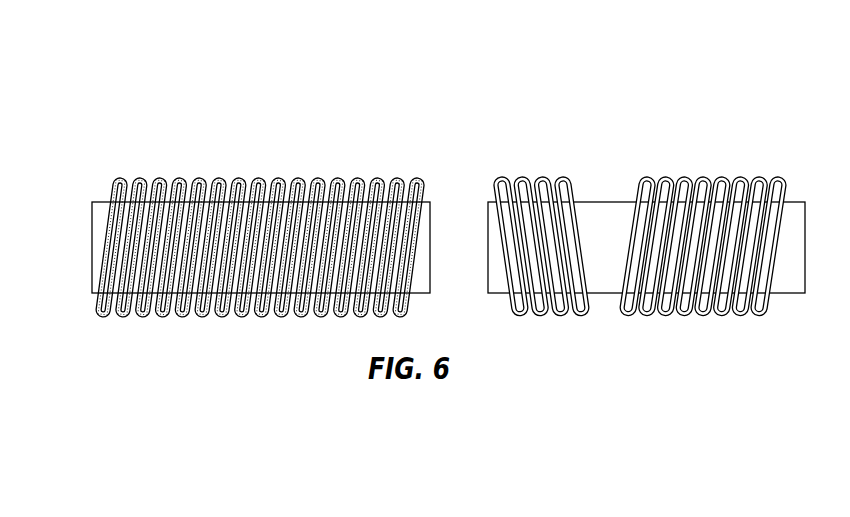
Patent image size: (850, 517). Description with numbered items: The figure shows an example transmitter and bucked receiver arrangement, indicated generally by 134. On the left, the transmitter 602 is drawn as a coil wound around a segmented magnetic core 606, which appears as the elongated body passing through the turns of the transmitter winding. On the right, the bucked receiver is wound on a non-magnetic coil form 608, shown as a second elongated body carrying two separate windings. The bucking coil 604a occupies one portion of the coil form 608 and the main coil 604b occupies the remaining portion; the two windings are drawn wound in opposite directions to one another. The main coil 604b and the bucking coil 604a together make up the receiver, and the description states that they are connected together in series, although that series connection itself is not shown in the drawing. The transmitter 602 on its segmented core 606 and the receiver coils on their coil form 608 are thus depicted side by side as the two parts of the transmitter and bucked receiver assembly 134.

The coil assembly 134 is at (668, 54).
The transmitter 602 is at (338, 180).
The bucking coil 604a is at (543, 179).
The main coil 604b is at (702, 181).
The segmented magnetic core 606 is at (97, 202).
The non-magnetic coil form 608 is at (784, 295).